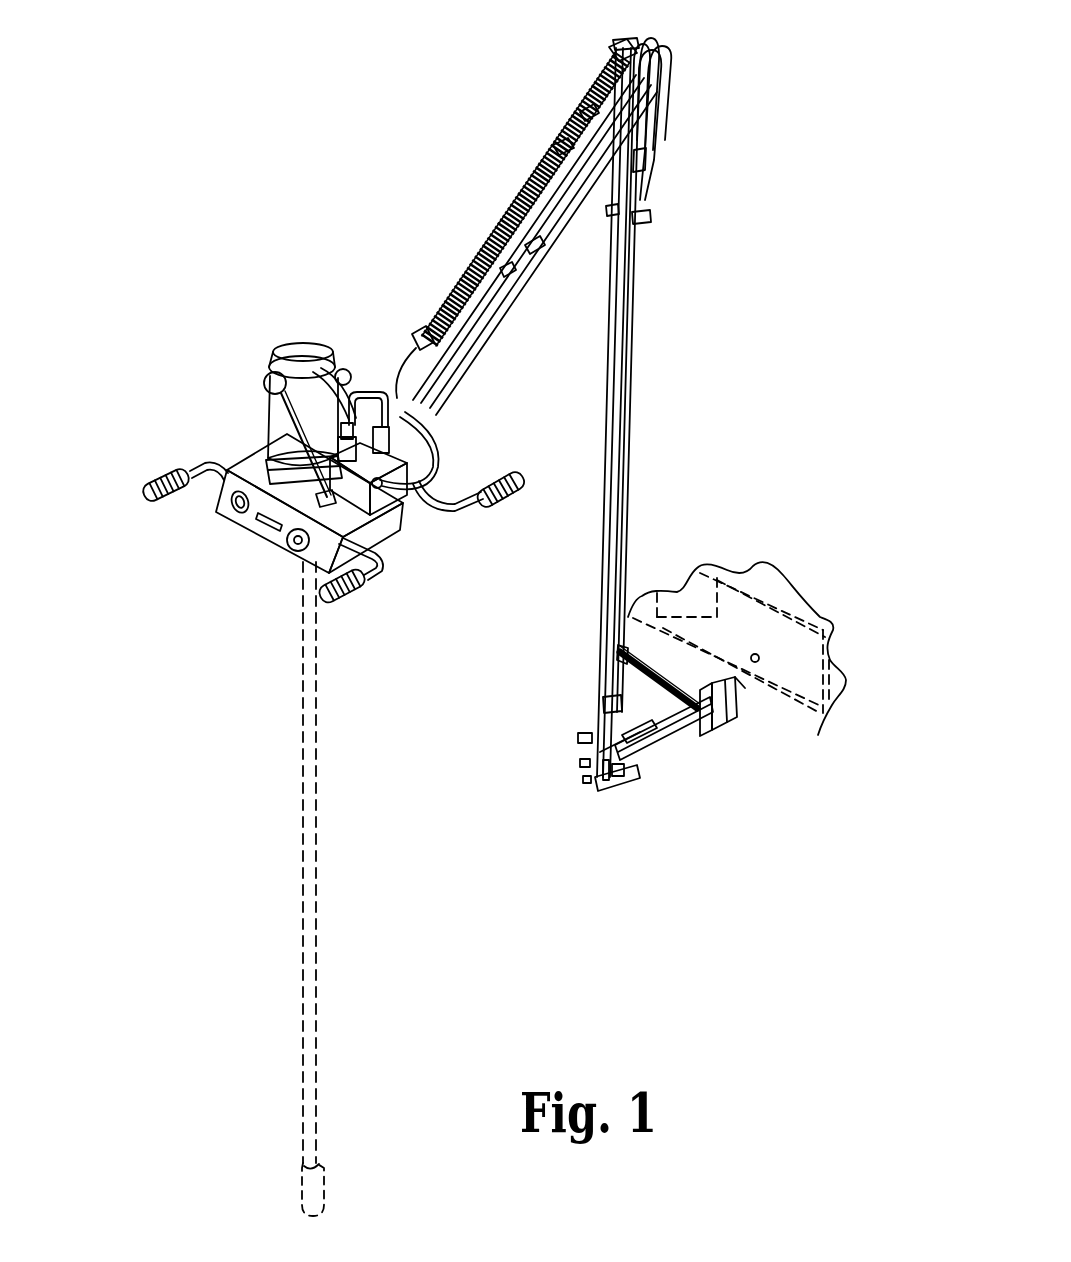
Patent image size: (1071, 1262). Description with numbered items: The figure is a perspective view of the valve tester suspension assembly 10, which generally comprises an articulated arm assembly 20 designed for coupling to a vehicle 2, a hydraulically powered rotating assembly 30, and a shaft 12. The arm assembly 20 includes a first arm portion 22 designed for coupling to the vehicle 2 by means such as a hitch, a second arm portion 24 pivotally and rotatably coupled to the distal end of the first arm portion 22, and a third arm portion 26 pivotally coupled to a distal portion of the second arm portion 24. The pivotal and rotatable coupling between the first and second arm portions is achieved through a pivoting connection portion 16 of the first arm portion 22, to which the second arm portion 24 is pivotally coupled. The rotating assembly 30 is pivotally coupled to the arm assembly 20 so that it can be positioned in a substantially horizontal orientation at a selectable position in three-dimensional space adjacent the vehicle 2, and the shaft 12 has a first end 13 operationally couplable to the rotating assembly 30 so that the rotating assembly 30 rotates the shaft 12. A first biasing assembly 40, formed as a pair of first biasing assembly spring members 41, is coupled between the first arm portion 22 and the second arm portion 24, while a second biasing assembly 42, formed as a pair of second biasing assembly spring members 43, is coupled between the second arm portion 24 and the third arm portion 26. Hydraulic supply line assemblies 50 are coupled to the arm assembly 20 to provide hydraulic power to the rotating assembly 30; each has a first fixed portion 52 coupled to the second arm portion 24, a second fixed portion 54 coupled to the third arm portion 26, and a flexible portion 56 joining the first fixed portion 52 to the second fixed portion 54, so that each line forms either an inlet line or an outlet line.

The valve tester suspension assembly 10 is at (316, 133).
The vehicle 2 is at (755, 607).
The shaft 12 is at (312, 940).
The first end 13 is at (272, 537).
The pivoting connection portion 16 is at (587, 783).
The articulated arm assembly 20 is at (648, 275).
The first arm portion 22 is at (670, 743).
The second arm portion 24 is at (608, 502).
The third arm portion 26 is at (507, 263).
The hydraulically powered rotating assembly 30 is at (280, 430).
The first biasing assembly 40 is at (658, 655).
The first biasing assembly spring members 41 is at (637, 650).
The second biasing assembly 42 is at (497, 134).
The second biasing assembly spring members 43 is at (577, 98).
The hydraulic supply line assemblies 50 is at (635, 390).
The first fixed portion 52 is at (640, 222).
The second fixed portion 54 is at (542, 237).
The flexible portion 56 is at (665, 53).